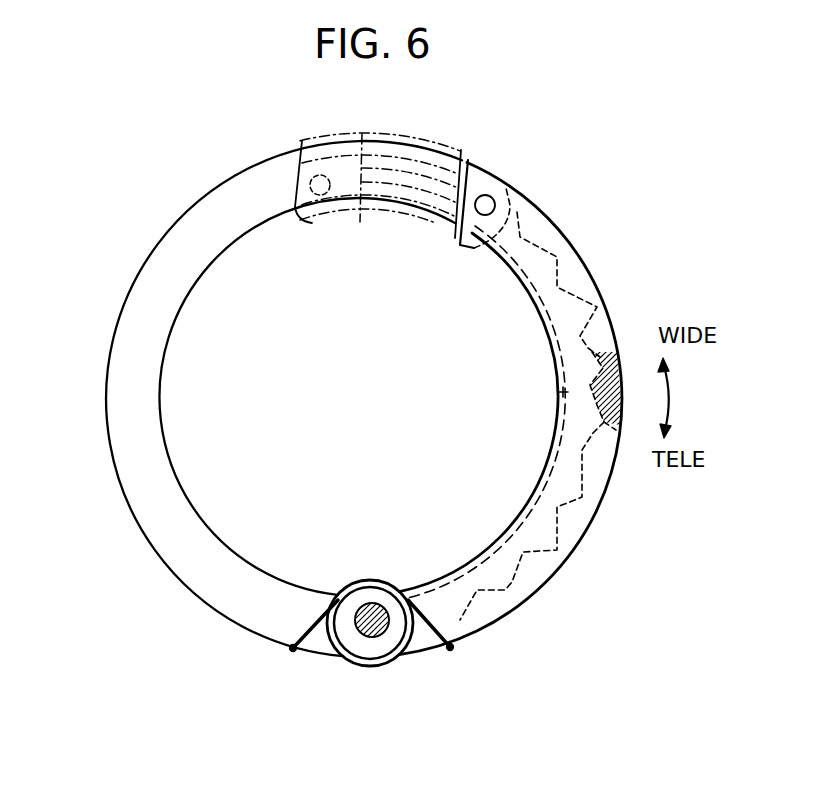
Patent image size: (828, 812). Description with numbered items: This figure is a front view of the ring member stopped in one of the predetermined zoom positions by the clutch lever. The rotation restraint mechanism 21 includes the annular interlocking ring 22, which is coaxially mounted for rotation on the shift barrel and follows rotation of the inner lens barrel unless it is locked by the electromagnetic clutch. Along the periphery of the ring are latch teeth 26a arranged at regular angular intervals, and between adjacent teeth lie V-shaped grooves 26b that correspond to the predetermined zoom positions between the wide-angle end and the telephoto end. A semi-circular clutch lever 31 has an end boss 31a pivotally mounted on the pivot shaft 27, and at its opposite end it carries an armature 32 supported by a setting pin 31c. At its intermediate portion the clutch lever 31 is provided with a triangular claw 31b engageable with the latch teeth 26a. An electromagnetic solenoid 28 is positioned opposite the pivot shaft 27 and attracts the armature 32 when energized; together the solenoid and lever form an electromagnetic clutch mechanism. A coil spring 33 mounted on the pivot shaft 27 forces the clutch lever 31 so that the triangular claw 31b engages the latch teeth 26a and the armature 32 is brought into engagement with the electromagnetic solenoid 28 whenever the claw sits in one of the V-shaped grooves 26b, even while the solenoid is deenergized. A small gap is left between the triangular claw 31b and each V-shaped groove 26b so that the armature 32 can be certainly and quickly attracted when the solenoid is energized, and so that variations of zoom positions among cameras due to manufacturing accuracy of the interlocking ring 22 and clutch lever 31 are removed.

The rotation restraint mechanism 21 is at (157, 214).
The interlocking ring 22 is at (130, 432).
The latch teeth 26a is at (598, 312).
The V-shaped grooves 26b is at (558, 392).
The pivot shaft 27 is at (370, 612).
The electromagnetic solenoid 28 is at (438, 134).
The clutch lever 31 is at (578, 272).
The end boss 31a is at (388, 596).
The triangular claw 31b is at (553, 340).
The setting pin 31c is at (495, 200).
The armature 32 is at (469, 164).
The coil spring 33 is at (295, 645).